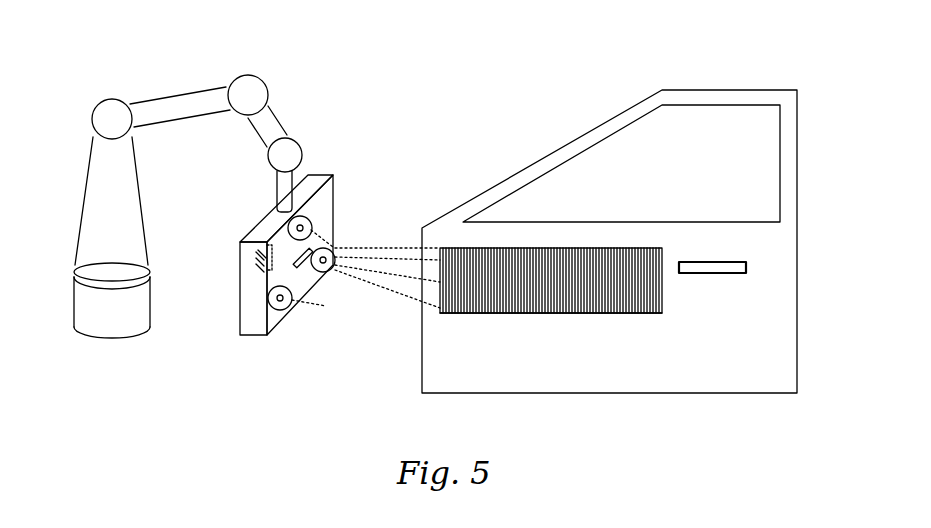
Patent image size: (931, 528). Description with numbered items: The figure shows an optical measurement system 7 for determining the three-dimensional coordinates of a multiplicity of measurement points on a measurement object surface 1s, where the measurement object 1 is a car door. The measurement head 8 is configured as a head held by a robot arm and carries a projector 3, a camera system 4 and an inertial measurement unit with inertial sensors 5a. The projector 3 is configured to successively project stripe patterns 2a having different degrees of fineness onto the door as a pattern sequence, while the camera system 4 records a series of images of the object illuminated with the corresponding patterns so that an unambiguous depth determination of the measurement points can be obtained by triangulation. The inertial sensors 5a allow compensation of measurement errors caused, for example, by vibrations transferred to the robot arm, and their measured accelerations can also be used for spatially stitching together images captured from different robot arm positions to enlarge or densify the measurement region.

The measurement object 1 is at (609, 213).
The measurement object surface 1s is at (594, 367).
The stripe pattern 2a is at (551, 243).
The projector 3 is at (354, 269).
The camera system 4 is at (289, 275).
The inertial sensors 5a is at (247, 270).
The optical measurement system 7 is at (231, 190).
The measurement head 8 is at (263, 317).